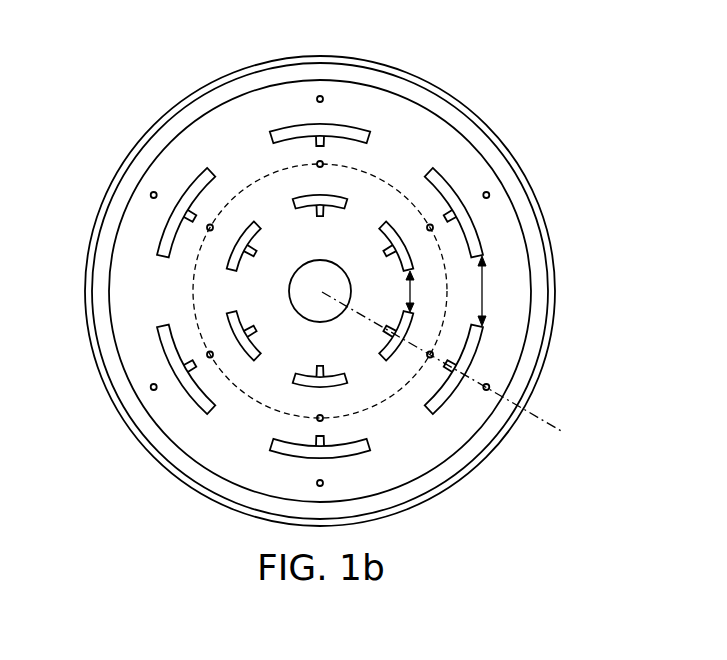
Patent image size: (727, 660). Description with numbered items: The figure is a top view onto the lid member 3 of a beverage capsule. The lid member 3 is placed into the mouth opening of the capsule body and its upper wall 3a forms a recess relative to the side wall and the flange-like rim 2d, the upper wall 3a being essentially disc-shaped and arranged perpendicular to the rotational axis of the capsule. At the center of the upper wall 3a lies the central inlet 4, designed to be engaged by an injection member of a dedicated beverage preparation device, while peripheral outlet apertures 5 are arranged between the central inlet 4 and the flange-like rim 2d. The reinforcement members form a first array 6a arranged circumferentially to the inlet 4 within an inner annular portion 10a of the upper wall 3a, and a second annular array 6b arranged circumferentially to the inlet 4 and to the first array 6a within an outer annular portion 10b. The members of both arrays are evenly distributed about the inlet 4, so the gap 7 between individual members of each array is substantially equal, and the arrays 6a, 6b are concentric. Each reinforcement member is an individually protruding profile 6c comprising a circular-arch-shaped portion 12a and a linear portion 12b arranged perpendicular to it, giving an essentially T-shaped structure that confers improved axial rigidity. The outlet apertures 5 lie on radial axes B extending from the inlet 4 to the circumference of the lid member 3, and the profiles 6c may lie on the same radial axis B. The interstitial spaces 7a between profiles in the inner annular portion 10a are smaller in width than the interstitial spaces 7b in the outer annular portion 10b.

The flange-like rim 2d is at (373, 77).
The lid member 3 is at (485, 152).
The upper wall 3a is at (413, 135).
The central inlet 4 is at (332, 313).
The peripheral outlet apertures 5 is at (490, 194).
The first array 6a is at (228, 267).
The second annular array 6b is at (168, 353).
The protruding profiles 6c is at (205, 173).
The gap 7 is at (413, 160).
The interstitial spaces 7a is at (399, 291).
The interstitial spaces 7b is at (472, 291).
The inner annular portion 10a is at (263, 387).
The outer annular portion 10b is at (142, 298).
The circular-arch-shaped portion 12a is at (296, 130).
The linear portion 12b is at (326, 139).
The radial axis B is at (547, 422).